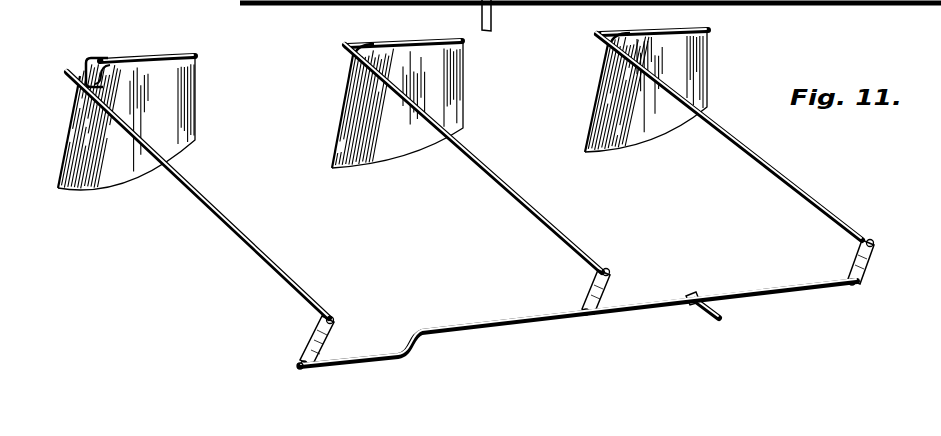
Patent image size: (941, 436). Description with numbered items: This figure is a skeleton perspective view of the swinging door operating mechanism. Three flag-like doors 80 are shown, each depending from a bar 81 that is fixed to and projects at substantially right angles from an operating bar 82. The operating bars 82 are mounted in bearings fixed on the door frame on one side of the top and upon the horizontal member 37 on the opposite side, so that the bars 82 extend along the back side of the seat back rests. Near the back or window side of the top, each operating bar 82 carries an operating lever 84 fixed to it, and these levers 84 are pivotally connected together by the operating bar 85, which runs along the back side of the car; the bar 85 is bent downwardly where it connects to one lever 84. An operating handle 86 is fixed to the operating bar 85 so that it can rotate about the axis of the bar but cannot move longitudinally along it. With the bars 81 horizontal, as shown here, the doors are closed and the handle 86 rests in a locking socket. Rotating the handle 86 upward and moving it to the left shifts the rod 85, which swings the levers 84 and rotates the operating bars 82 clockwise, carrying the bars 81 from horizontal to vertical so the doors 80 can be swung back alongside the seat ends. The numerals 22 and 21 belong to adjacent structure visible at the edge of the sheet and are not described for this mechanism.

The part of adjacent figure 22 is at (132, 0).
The part of adjacent figure 21 is at (170, 0).
The horizontal member 37 is at (353, 2).
The flag-like door 80 is at (182, 108).
The bar 81 is at (196, 60).
The operating bar 82 is at (207, 200).
The operating lever 84 is at (308, 338).
The operating bar 85 is at (461, 328).
The operating handle 86 is at (492, 20).